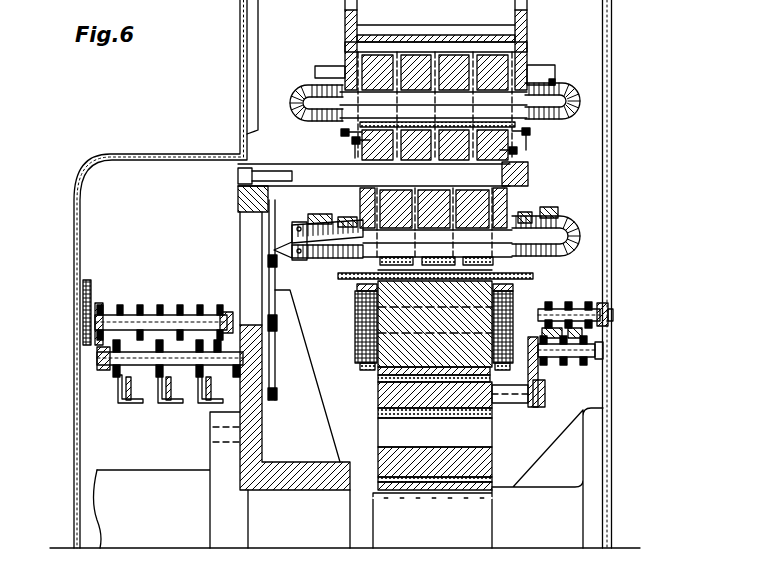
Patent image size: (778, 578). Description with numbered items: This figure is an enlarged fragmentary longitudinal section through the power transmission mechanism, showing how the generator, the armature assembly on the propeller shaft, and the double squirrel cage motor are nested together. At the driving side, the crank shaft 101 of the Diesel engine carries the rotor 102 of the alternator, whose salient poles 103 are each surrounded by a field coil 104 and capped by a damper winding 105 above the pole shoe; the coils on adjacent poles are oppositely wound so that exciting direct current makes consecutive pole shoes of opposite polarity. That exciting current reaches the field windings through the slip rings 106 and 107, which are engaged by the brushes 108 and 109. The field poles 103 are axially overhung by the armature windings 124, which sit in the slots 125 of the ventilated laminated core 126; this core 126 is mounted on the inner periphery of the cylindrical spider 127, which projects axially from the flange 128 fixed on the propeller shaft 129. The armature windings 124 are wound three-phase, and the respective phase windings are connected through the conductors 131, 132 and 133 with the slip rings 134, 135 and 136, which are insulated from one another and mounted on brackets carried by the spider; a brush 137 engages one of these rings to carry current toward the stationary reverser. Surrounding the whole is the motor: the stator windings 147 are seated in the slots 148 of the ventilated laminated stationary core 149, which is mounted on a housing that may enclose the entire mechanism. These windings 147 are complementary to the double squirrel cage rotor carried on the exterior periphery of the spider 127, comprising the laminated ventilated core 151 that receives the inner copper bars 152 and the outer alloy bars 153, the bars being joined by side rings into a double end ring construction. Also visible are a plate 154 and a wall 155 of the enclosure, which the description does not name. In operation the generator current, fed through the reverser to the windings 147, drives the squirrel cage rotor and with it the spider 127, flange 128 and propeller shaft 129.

The crank shaft 101 is at (598, 448).
The rotor 102 is at (478, 431).
The salient poles 103 is at (400, 340).
The field coil 104 is at (360, 310).
The damper winding 105 is at (345, 270).
The slip ring 106 is at (551, 360).
The slip ring 107 is at (588, 329).
The brush 108 is at (545, 308).
The brush 109 is at (583, 300).
The armature windings 124 is at (580, 250).
The slots 125 is at (566, 210).
The laminated core 126 is at (530, 213).
The cylindrical spider 127 is at (530, 178).
The flange 128 is at (238, 188).
The propeller shaft 129 is at (97, 497).
The conductor 131 is at (258, 422).
The conductor 132 is at (180, 407).
The conductor 133 is at (140, 408).
The slip ring 134 is at (278, 386).
The slip ring 135 is at (150, 380).
The slip ring 136 is at (112, 380).
The brush 137 is at (102, 358).
The stator windings 147 is at (553, 81).
The slots 148 is at (316, 72).
The stationary core 149 is at (378, 66).
The laminated core 151 is at (352, 142).
The inner copper bars 152 is at (343, 133).
The outer alloy bars 153 is at (536, 131).
The mounting plate 154 is at (357, 166).
The housing wall 155 is at (530, 166).